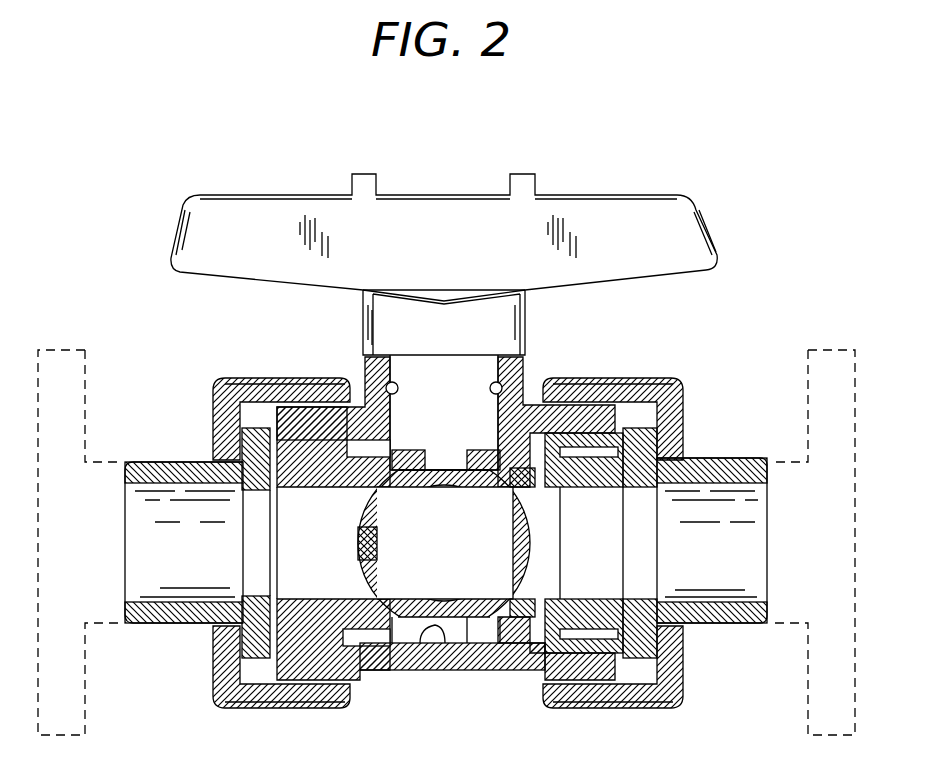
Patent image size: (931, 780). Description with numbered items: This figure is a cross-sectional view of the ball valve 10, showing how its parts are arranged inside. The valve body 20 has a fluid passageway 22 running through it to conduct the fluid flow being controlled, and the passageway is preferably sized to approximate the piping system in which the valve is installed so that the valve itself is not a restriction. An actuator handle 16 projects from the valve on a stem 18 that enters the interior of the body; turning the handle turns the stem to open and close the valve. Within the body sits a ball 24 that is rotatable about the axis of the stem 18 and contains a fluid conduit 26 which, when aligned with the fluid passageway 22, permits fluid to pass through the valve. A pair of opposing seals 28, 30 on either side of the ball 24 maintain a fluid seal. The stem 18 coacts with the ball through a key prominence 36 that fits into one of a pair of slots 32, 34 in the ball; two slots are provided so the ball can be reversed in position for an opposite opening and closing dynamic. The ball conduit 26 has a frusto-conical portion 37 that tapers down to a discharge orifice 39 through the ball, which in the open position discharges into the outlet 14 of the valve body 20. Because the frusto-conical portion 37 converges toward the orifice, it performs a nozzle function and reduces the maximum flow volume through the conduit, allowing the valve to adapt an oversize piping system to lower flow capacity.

The ball valve 10 is at (446, 410).
The outlet 14 is at (118, 547).
The actuator handle 16 is at (593, 216).
The stem 18 is at (471, 362).
The valve body 20 is at (446, 547).
The fluid passageway 22 is at (612, 527).
The ball 24 is at (415, 641).
The fluid conduit 26 is at (414, 543).
The seal 28 is at (346, 468).
The seal 30 is at (548, 591).
The slot 32 is at (446, 650).
The slot 34 is at (499, 488).
The key prominence 36 is at (440, 468).
The frusto-conical portion 37 is at (397, 558).
The discharge orifice 39 is at (358, 549).